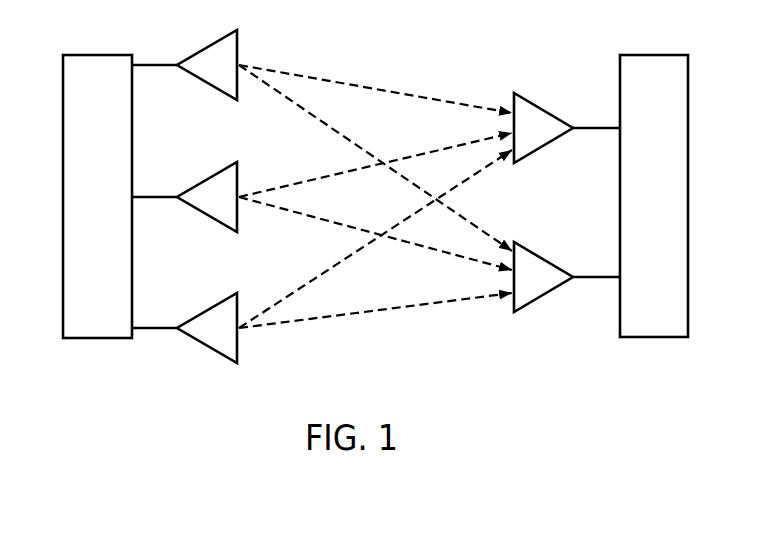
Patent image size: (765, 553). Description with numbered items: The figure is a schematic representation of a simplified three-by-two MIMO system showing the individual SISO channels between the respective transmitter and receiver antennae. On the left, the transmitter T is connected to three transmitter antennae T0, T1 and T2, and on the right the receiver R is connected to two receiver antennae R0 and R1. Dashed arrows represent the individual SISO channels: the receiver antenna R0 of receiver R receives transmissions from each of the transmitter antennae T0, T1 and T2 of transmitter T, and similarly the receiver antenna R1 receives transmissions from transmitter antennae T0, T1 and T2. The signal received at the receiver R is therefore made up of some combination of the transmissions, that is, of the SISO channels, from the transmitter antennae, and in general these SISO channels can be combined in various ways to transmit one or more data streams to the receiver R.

The transmitter T is at (90, 206).
The receiver R is at (645, 206).
The transmitter antenna T0 is at (184, 65).
The transmitter antenna T1 is at (184, 197).
The transmitter antenna T2 is at (184, 328).
The receiver antenna R0 is at (567, 128).
The receiver antenna R1 is at (567, 277).